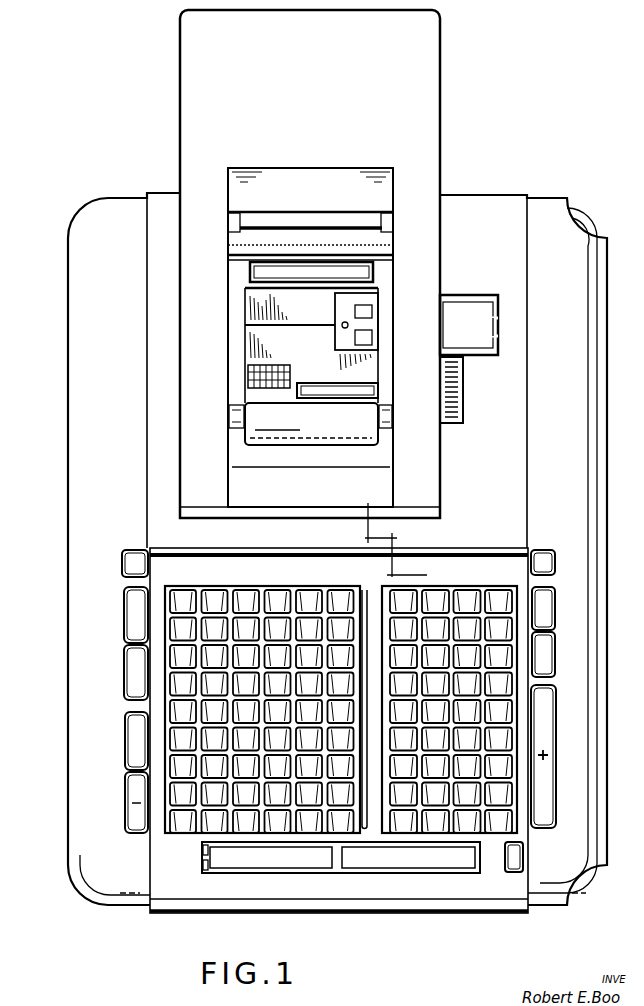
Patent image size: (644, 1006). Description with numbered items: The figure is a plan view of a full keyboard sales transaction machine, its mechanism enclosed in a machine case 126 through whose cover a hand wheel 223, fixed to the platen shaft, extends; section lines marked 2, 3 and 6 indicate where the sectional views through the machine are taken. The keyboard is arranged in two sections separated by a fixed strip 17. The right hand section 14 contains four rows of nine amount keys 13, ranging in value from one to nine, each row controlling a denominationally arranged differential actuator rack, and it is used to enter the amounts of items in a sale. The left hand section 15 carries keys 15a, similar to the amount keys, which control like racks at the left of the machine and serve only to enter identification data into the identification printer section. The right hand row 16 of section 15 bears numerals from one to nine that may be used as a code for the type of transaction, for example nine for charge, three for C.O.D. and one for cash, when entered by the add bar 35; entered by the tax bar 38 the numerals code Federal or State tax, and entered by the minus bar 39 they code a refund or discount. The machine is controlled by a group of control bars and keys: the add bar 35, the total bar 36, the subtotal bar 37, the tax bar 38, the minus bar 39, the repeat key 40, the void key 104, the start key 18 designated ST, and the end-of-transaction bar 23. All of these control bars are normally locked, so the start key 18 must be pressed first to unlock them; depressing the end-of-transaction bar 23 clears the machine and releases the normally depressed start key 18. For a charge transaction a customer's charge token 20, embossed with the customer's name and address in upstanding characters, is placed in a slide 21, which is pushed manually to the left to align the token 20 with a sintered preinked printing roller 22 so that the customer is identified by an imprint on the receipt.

The machine case 126 is at (78, 495).
The sintered preinked printing roller 22 is at (308, 447).
The customer's charge token 20 is at (486, 322).
The slide 21 is at (497, 345).
The hand wheel 223 is at (455, 395).
The end-of-transaction bar 23 is at (122, 562).
The total bar 36 is at (130, 626).
The subtotal bar 37 is at (130, 683).
The tax bar 38 is at (128, 752).
The minus bar 39 is at (135, 817).
The start key 18 is at (556, 553).
The void key 104 is at (556, 610).
The repeat key 40 is at (556, 658).
The add bar 35 is at (556, 712).
The right hand keyboard section 14 is at (512, 835).
The left hand keyboard section 15 is at (257, 722).
The identification keys 15a is at (240, 834).
The amount keys 13 is at (493, 592).
The right hand row of keyboard section 16 is at (337, 832).
The fixed strip 17 is at (365, 832).
The section line 2- 2 is at (368, 437).
The section line 3- 3 is at (348, 113).
The section line 6- 6 is at (460, 255).